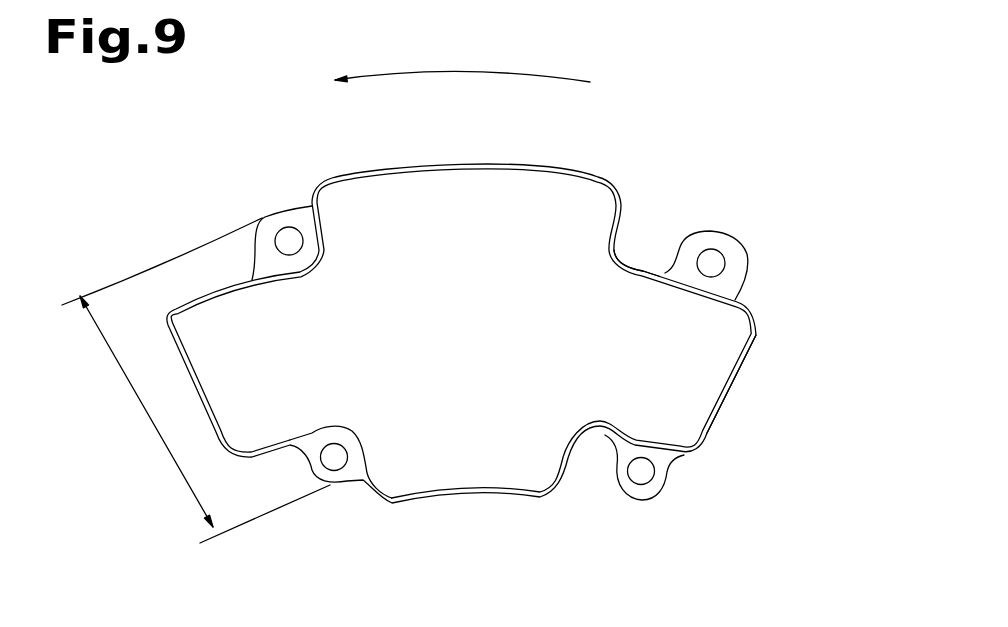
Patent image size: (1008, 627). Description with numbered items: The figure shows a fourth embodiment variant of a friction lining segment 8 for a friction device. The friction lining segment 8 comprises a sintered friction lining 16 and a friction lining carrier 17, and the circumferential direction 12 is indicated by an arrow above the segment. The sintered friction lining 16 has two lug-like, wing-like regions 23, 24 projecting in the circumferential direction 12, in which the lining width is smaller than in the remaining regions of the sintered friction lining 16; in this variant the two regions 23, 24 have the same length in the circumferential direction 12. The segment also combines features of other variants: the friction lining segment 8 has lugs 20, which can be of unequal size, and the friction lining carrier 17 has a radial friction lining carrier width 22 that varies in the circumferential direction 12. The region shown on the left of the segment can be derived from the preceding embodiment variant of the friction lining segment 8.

The friction lining segment 8 is at (697, 135).
The circumferential direction 12 is at (457, 60).
The sintered friction lining 16 is at (538, 268).
The friction lining carrier 17 is at (652, 270).
The lugs 20 is at (750, 240).
The radial friction lining carrier width 22 is at (131, 399).
The lug-like region 23 is at (233, 385).
The lug-like region 24 is at (700, 400).